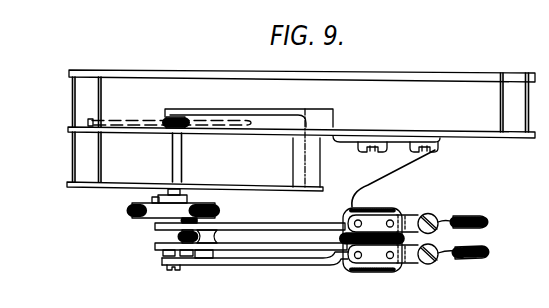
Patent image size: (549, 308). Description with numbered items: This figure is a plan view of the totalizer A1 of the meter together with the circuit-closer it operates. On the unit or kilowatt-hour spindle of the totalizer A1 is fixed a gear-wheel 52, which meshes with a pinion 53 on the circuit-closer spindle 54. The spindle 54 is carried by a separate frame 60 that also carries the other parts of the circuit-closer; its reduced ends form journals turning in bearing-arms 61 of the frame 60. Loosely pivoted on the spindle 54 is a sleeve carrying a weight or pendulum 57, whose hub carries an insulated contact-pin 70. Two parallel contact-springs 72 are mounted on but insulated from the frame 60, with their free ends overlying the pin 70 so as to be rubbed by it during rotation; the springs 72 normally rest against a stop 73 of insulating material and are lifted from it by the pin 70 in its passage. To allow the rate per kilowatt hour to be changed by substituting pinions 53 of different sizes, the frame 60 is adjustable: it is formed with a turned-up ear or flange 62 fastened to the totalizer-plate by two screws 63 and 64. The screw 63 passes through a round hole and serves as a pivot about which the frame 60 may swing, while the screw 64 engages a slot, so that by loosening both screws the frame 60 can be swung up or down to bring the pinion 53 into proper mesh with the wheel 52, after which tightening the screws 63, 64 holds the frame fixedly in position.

The totalizer A1 is at (481, 68).
The gear-wheel 52 is at (222, 119).
The pinion 53 is at (167, 120).
The circuit-closer spindle 54 is at (178, 157).
The weight or pendulum 57 is at (217, 208).
The frame 60 is at (411, 215).
The bearing-arms 61 is at (302, 113).
The turned-up ear or flange 62 is at (407, 138).
The screw 63 is at (435, 152).
The screw 64 is at (398, 158).
The contact-pin 70 is at (186, 258).
The contact-springs 72 is at (270, 230).
The stop 73 is at (213, 258).